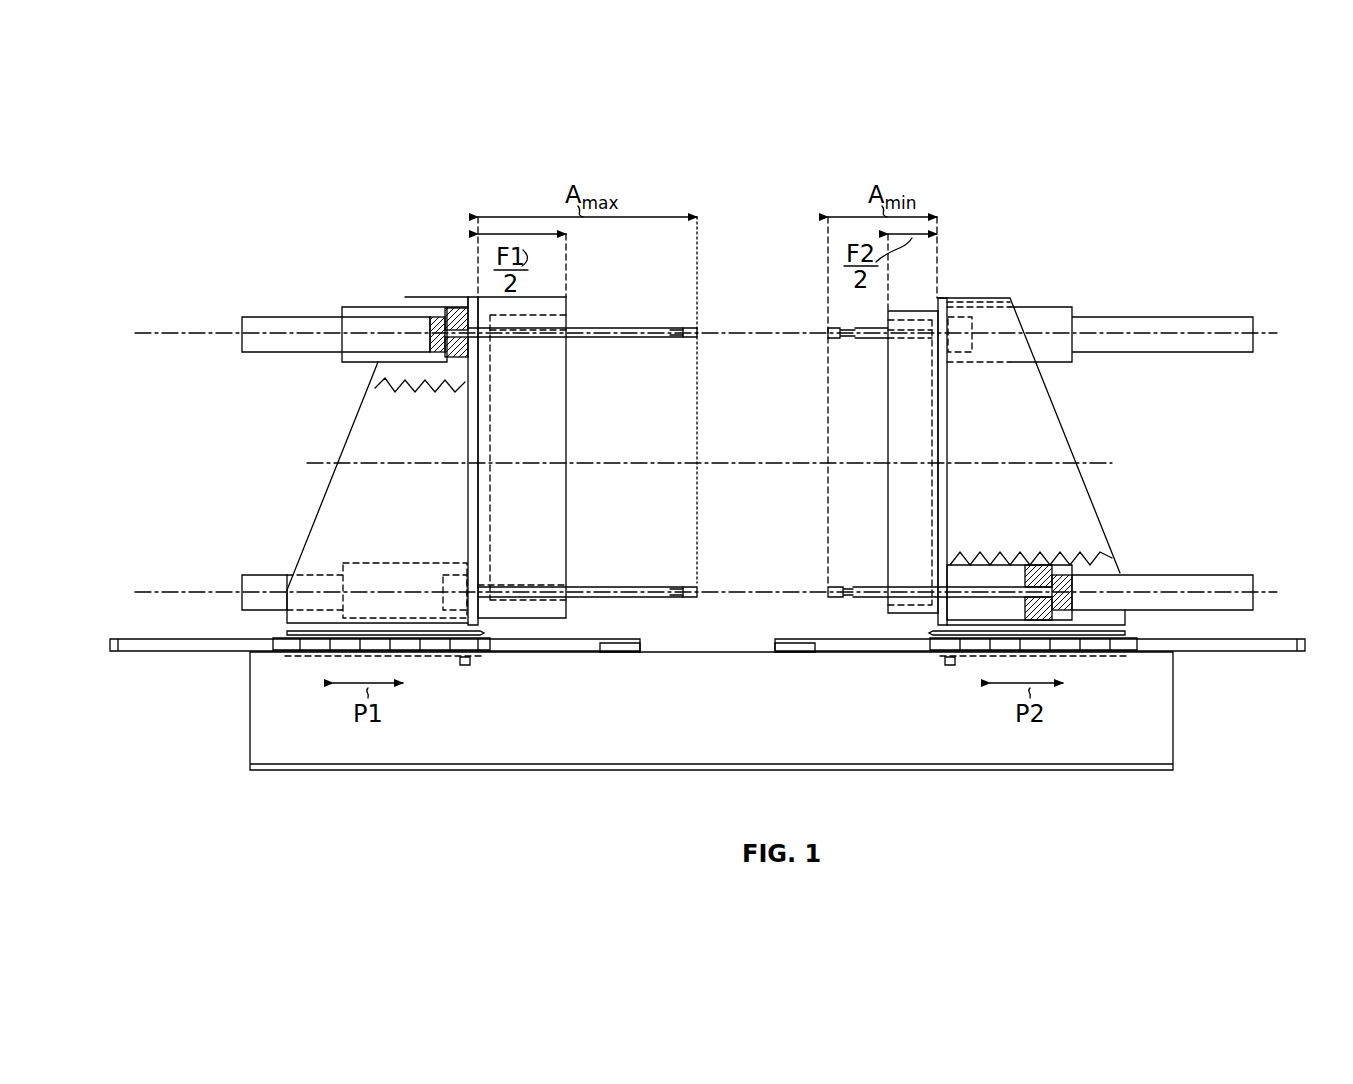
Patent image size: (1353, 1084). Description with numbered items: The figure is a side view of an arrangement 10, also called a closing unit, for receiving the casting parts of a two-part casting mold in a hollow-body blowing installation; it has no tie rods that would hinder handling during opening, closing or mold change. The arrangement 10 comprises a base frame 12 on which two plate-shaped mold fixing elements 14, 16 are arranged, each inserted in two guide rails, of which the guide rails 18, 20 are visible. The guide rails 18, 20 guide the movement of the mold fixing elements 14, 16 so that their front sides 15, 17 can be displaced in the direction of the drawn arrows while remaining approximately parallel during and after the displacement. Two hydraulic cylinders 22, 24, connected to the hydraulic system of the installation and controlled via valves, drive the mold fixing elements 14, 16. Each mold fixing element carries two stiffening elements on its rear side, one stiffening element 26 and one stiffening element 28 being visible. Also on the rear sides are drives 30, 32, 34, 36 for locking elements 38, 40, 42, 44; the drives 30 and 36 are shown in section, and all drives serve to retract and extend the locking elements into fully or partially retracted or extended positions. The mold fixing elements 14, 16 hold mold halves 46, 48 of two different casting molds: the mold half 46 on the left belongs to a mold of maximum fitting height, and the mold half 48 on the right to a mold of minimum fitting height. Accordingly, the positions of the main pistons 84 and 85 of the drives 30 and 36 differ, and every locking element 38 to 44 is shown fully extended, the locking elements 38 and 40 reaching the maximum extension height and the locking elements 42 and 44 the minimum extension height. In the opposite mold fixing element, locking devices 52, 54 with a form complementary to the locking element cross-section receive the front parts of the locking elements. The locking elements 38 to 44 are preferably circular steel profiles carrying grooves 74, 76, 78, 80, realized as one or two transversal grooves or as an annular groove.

The arrangement 10 is at (1108, 172).
The base frame 12 is at (600, 752).
The mold fixing element 14 is at (473, 418).
The front side 15 is at (482, 511).
The mold fixing element 16 is at (938, 404).
The front side 17 is at (934, 441).
The guide rail 18 is at (618, 643).
The guide rail 20 is at (787, 643).
The hydraulic cylinder 22 is at (165, 647).
The hydraulic cylinder 24 is at (1248, 652).
The stiffening element 26 is at (381, 513).
The stiffening element 28 is at (1033, 481).
The drive 30 is at (340, 375).
The drive 32 is at (390, 562).
The drive 34 is at (1088, 298).
The drive 36 is at (1163, 555).
The locking element 38 is at (620, 330).
The locking element 40 is at (590, 587).
The locking element 42 is at (827, 332).
The locking element 44 is at (828, 590).
The mold half 46 is at (548, 497).
The mold half 48 is at (903, 493).
The locking device 52 is at (460, 602).
The locking device 54 is at (963, 328).
The groove 74 is at (678, 340).
The groove 76 is at (680, 585).
The groove 78 is at (850, 340).
The groove 80 is at (848, 587).
The main piston 84 is at (457, 308).
The main piston 85 is at (1038, 565).